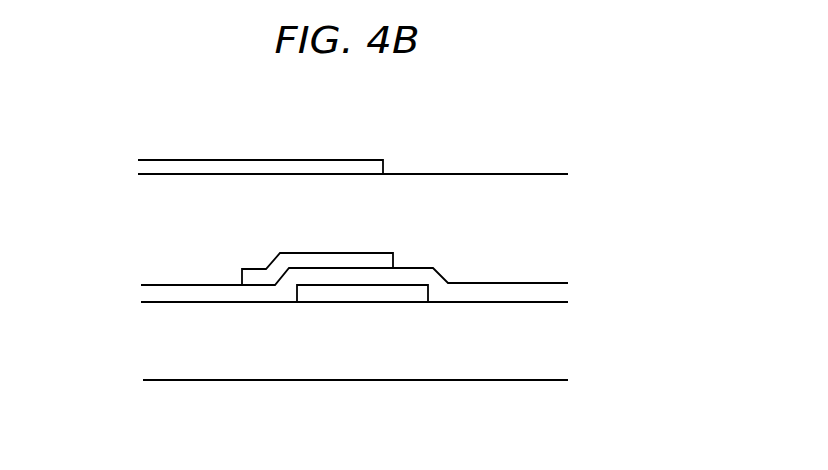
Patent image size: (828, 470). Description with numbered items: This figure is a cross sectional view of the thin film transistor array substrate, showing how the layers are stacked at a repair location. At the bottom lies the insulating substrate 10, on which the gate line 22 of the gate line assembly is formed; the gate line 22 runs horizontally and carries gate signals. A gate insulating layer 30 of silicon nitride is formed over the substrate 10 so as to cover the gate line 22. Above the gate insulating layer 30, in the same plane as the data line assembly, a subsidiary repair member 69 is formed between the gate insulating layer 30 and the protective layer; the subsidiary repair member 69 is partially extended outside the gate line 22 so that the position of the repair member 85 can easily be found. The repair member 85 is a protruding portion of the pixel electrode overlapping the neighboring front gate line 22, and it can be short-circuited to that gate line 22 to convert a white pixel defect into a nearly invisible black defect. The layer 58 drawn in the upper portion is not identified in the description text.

The insulating substrate 10 is at (183, 363).
The gate line 22 is at (352, 292).
The gate insulating layer 30 is at (499, 292).
The subsidiary repair member 69 is at (255, 282).
The pixel electrode 58 is at (157, 167).
The repair member 85 is at (366, 167).